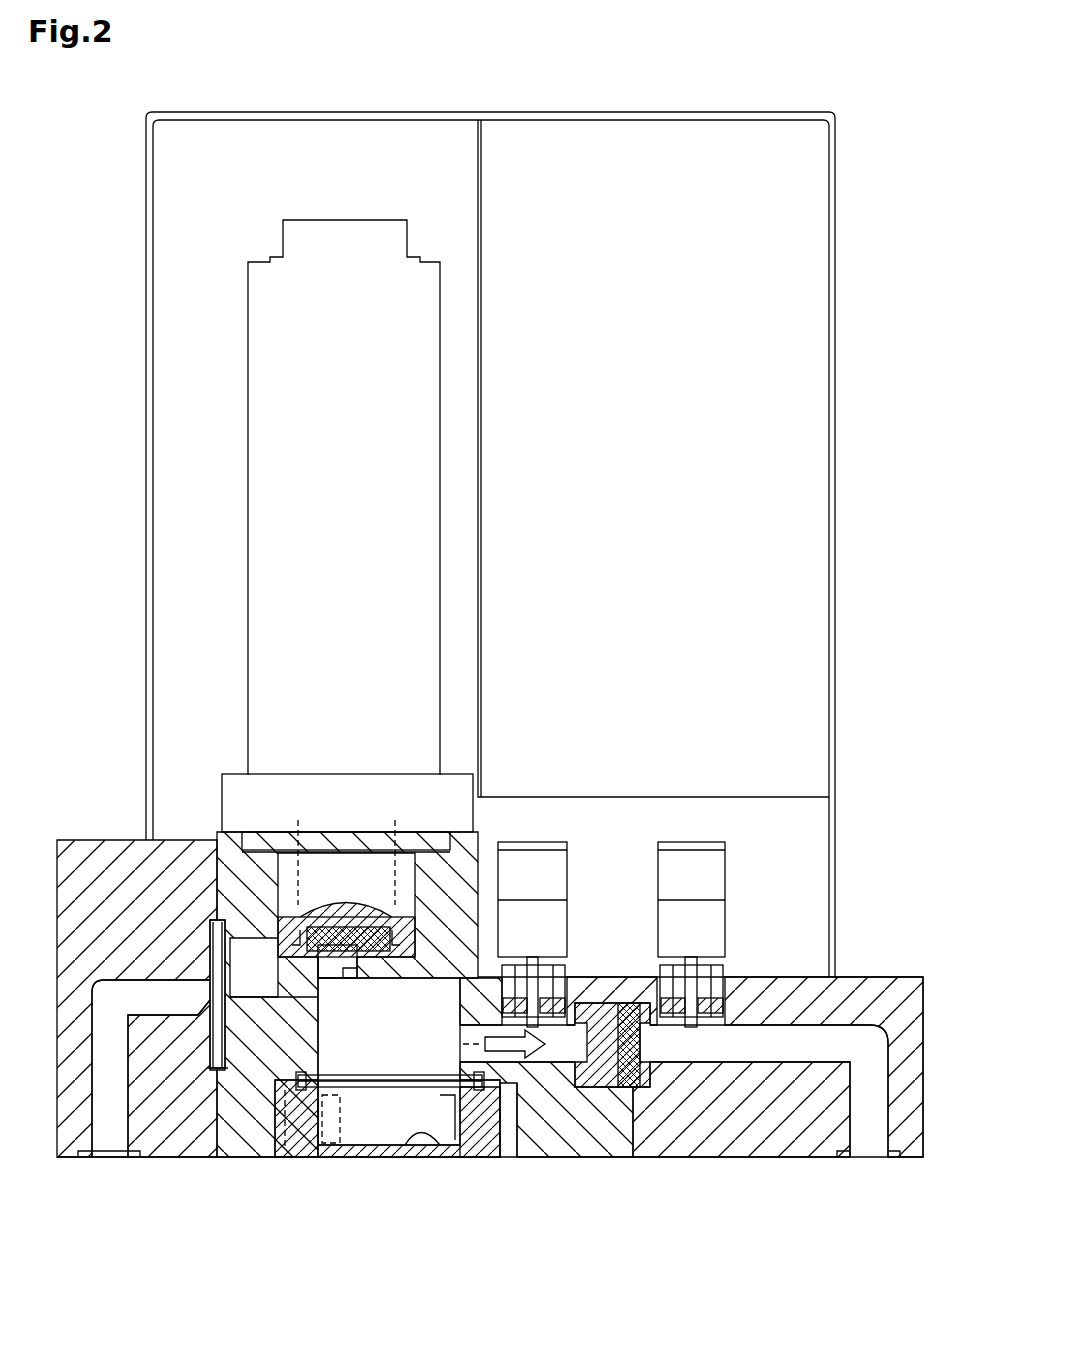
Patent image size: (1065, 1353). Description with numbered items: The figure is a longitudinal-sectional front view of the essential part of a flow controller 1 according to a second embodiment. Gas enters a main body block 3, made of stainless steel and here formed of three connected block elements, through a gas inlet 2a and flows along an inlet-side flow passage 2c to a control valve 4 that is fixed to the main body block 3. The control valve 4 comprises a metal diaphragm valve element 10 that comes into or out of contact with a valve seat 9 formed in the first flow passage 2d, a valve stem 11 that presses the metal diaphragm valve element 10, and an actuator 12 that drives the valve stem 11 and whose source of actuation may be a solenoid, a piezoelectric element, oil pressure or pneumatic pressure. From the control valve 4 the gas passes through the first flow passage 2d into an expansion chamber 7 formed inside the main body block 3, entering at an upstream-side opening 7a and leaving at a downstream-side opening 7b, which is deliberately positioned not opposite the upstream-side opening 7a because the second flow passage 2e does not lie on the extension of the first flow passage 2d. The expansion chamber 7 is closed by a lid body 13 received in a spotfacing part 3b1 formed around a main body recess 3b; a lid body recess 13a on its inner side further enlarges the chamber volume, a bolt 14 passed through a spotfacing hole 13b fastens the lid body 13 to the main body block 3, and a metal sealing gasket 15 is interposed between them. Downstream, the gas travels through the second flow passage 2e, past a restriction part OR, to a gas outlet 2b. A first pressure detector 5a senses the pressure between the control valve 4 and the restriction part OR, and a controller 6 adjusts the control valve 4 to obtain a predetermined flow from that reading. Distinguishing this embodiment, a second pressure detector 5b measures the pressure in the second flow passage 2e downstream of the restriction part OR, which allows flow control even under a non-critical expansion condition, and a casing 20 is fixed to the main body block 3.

The flow controller 1 is at (566, 95).
The casing 20 is at (146, 297).
The controller 6 is at (800, 489).
The control valve 4 is at (205, 670).
The actuator 12 is at (248, 410).
The gas inlet 2a is at (110, 1158).
The gas outlet 2b is at (863, 1157).
The inlet-side flow passage 2c is at (100, 1048).
The first flow passage 2d is at (212, 945).
The second flow passage 2e is at (550, 1060).
The main body block 3 is at (250, 1166).
The main body recess 3b is at (478, 978).
The spotfacing part 3b1 is at (508, 1160).
The first pressure detector 5a is at (570, 874).
The second pressure detector 5b is at (731, 874).
The restriction part OR is at (640, 1035).
The expansion chamber 7 is at (384, 1056).
The upstream-side opening 7a is at (350, 984).
The downstream-side opening 7b is at (463, 1048).
The valve seat 9 is at (330, 957).
The metal diaphragm valve element 10 is at (302, 942).
The valve stem 11 is at (295, 935).
The lid body 13 is at (400, 1160).
The lid body recess 13a is at (440, 1160).
The spotfacing hole 13b is at (293, 1160).
The bolt 14 is at (320, 1160).
The metal sealing gasket 15 is at (360, 1160).